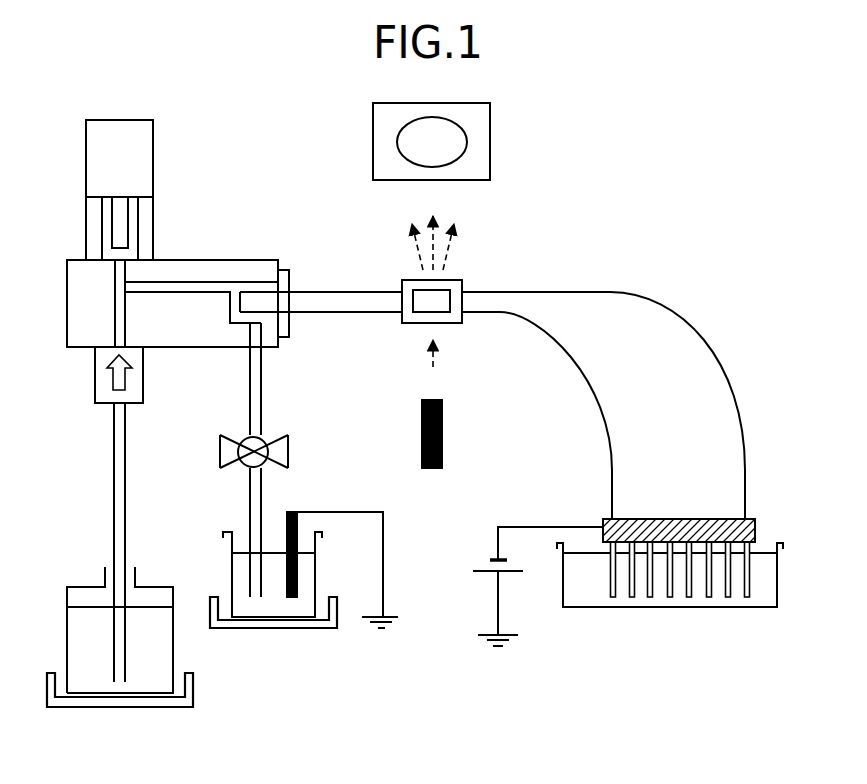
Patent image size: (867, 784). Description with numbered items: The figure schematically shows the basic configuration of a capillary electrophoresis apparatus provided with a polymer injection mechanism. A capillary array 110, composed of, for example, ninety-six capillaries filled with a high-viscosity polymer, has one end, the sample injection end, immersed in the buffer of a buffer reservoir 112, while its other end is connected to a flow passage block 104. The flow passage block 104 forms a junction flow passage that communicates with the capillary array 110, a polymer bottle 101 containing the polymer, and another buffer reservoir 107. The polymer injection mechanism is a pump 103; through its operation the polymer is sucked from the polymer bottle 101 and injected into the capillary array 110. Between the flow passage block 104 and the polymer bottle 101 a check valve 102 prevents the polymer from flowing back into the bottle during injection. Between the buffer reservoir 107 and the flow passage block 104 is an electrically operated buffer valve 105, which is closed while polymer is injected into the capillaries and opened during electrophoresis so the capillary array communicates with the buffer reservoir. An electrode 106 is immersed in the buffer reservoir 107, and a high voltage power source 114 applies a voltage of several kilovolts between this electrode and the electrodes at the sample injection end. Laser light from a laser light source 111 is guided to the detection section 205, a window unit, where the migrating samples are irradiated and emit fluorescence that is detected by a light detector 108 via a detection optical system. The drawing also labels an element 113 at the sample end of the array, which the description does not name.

The polymer bottle 101 is at (92, 678).
The check valve 102 is at (102, 398).
The pump 103 is at (153, 150).
The flow passage block 104 is at (238, 260).
The buffer valve 105 is at (280, 438).
The electrode 106 is at (292, 597).
The buffer reservoir 107 is at (247, 607).
The light detector 108 is at (490, 142).
The capillary array 110 is at (610, 302).
The laser light source 111 is at (442, 430).
The buffer reservoir 112 is at (588, 590).
The collector plate with electrodes 113 is at (750, 570).
The high voltage power source 114 is at (480, 575).
The detection section 205 is at (458, 280).